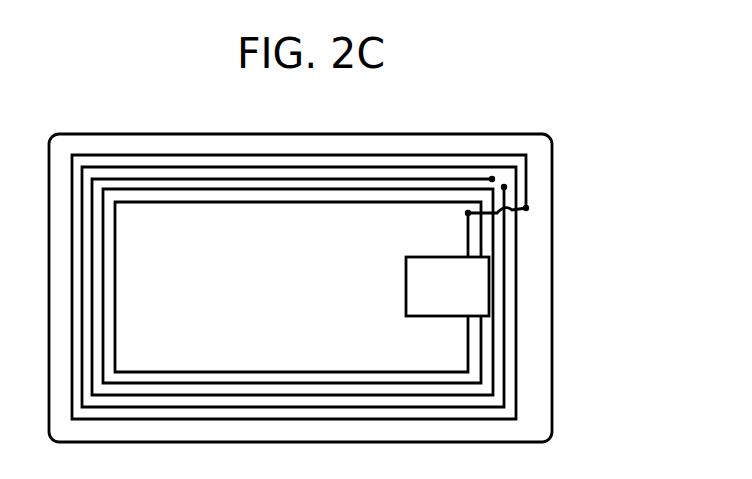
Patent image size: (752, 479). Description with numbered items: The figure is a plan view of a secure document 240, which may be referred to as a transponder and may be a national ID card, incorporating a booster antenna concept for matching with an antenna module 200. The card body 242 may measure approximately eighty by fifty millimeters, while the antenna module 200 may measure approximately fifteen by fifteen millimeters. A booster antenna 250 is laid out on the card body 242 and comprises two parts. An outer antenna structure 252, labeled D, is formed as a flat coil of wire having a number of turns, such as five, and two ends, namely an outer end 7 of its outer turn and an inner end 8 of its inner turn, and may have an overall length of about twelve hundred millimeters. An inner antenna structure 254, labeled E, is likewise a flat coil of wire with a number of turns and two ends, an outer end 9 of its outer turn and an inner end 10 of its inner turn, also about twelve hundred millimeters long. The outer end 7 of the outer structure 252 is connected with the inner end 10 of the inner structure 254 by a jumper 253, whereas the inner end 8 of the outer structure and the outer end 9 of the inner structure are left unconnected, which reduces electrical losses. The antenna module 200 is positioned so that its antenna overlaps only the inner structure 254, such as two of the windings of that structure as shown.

The secure document 240 is at (83, 108).
The card body 242 is at (258, 133).
The booster antenna 250 is at (215, 144).
The outer antenna structure 252 is at (388, 155).
The inner antenna structure 254 is at (183, 372).
The jumper 253 is at (500, 212).
The antenna module 200 is at (462, 297).
The outer end 7 is at (534, 215).
The inner end 8 is at (492, 179).
The outer end 9 is at (504, 187).
The inner end 10 is at (456, 216).